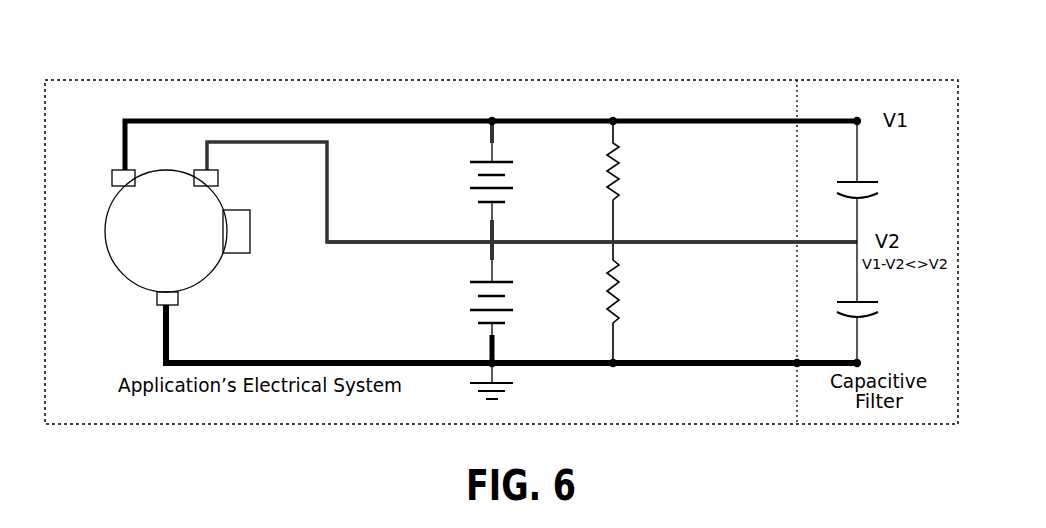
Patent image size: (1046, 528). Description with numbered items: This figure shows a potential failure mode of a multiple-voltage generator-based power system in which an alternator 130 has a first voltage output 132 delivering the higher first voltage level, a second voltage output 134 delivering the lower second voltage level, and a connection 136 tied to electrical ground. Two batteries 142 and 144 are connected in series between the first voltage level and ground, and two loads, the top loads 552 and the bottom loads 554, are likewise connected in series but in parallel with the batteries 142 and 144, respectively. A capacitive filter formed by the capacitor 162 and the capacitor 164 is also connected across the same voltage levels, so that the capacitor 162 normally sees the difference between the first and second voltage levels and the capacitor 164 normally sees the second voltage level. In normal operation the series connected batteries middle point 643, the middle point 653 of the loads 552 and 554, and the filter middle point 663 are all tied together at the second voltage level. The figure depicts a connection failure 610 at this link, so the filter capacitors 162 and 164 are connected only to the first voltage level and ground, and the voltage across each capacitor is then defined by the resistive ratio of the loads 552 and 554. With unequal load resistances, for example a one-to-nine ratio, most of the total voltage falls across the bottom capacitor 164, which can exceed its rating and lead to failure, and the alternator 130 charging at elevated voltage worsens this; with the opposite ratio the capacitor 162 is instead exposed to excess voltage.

The alternator 130 is at (188, 266).
The first voltage output 132 is at (118, 170).
The second voltage output 134 is at (199, 170).
The connection 136 is at (156, 304).
The battery 142 is at (475, 188).
The battery 144 is at (475, 308).
The top loads 552 is at (620, 156).
The bottom loads 554 is at (620, 273).
The connection failure 610 is at (572, 210).
The series connected batteries middle point 643 is at (497, 246).
The middle point of the loads 653 is at (620, 239).
The filter middle point 663 is at (795, 241).
The capacitor 162 is at (855, 180).
The capacitor 164 is at (855, 300).